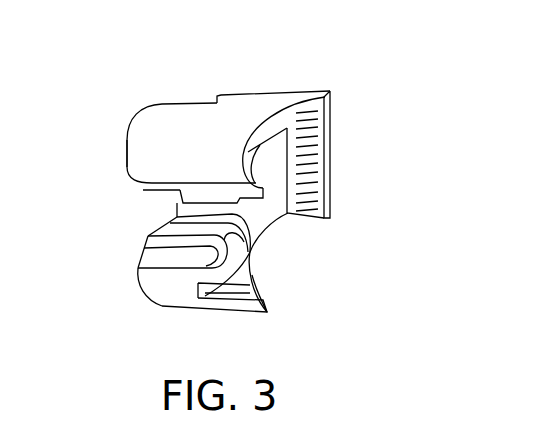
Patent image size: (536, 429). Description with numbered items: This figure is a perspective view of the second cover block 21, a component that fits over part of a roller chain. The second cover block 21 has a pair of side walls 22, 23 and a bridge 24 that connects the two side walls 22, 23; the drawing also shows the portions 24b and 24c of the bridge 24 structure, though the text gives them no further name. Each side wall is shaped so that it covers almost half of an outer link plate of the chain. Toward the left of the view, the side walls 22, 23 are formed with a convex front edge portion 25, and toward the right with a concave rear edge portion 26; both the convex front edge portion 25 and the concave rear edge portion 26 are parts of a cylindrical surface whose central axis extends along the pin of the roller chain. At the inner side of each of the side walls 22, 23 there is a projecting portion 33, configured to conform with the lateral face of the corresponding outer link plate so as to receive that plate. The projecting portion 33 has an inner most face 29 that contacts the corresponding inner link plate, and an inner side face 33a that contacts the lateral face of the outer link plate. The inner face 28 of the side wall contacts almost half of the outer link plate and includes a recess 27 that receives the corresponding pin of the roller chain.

The spring clip assembly 21 is at (282, 77).
The side wall 22 is at (170, 125).
The side wall 23 is at (228, 313).
The bridge 24 is at (317, 91).
The hatched surface of plate 24b is at (313, 197).
The top edge of plate 24c is at (220, 95).
The convex front edge portion 25 is at (124, 141).
The concave rear edge portion 26 is at (262, 136).
The recess 27 is at (139, 257).
The inner face 28 is at (155, 284).
The inner most face 29 is at (256, 312).
The projecting portion 33 is at (200, 192).
The inner side face 33a is at (251, 255).